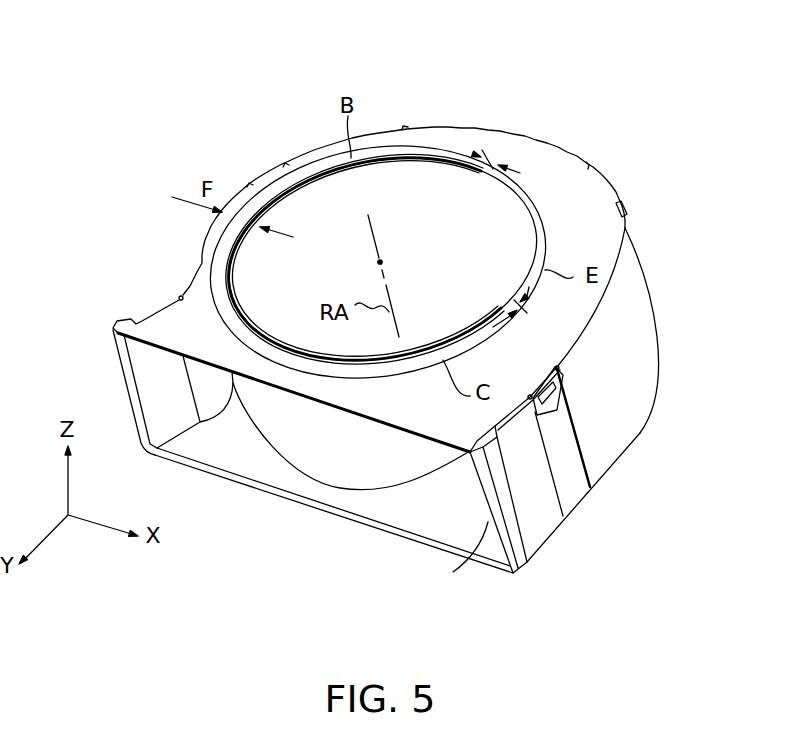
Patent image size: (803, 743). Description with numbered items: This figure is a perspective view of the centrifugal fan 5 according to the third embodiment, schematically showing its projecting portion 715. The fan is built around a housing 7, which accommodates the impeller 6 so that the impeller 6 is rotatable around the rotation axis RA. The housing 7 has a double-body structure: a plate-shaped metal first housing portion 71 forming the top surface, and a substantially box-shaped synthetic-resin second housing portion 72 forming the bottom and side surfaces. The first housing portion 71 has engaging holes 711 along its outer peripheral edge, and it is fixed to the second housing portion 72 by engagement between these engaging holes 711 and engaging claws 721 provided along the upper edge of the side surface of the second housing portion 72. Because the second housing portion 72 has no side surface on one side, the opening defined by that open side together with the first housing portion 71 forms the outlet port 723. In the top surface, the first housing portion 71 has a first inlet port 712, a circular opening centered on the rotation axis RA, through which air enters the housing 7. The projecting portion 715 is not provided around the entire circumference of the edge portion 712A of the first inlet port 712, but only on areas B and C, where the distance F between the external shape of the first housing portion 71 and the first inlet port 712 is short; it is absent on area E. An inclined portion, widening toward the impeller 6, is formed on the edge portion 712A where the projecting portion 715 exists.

The centrifugal fan 5 is at (623, 107).
The impeller 6 is at (338, 214).
The housing 7 is at (720, 222).
The first housing portion 71 is at (613, 237).
The second housing portion 72 is at (640, 332).
The engaging holes 711 is at (563, 393).
The first inlet port 712 is at (522, 197).
The edge portion 712A is at (532, 238).
The projecting portion 715 is at (432, 160).
The engaging claws 721 is at (560, 388).
The outlet port 723 is at (487, 520).